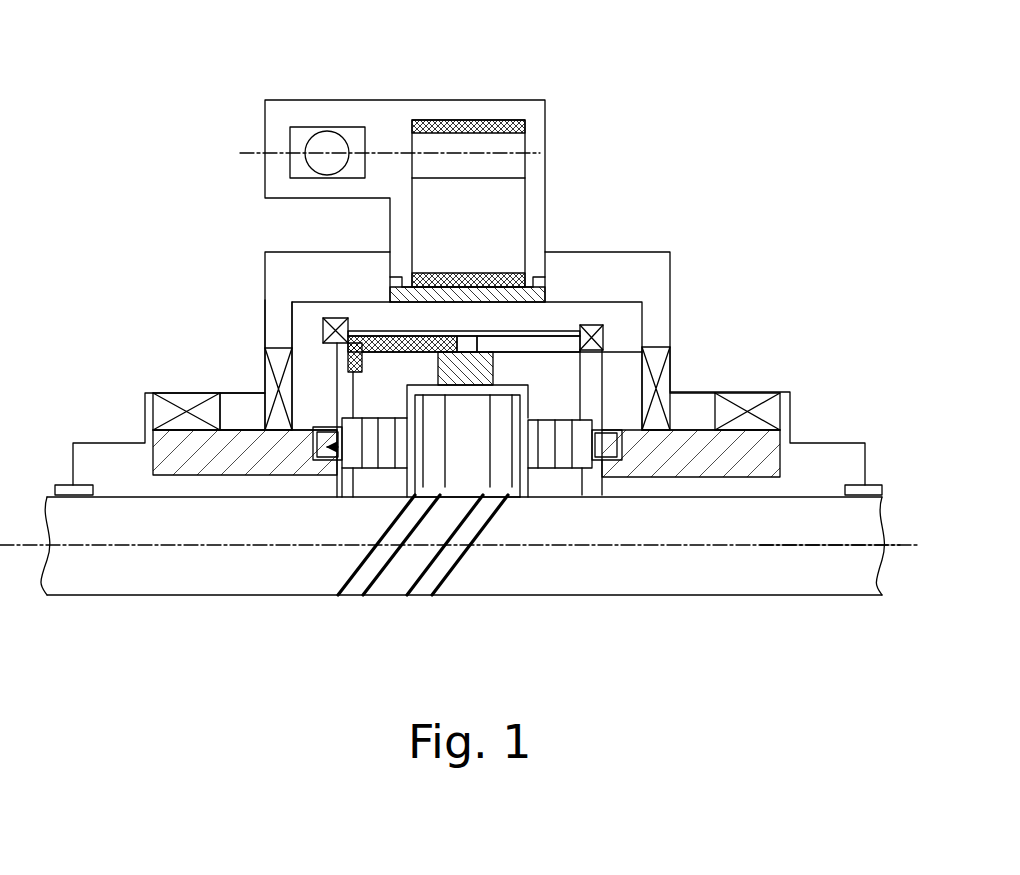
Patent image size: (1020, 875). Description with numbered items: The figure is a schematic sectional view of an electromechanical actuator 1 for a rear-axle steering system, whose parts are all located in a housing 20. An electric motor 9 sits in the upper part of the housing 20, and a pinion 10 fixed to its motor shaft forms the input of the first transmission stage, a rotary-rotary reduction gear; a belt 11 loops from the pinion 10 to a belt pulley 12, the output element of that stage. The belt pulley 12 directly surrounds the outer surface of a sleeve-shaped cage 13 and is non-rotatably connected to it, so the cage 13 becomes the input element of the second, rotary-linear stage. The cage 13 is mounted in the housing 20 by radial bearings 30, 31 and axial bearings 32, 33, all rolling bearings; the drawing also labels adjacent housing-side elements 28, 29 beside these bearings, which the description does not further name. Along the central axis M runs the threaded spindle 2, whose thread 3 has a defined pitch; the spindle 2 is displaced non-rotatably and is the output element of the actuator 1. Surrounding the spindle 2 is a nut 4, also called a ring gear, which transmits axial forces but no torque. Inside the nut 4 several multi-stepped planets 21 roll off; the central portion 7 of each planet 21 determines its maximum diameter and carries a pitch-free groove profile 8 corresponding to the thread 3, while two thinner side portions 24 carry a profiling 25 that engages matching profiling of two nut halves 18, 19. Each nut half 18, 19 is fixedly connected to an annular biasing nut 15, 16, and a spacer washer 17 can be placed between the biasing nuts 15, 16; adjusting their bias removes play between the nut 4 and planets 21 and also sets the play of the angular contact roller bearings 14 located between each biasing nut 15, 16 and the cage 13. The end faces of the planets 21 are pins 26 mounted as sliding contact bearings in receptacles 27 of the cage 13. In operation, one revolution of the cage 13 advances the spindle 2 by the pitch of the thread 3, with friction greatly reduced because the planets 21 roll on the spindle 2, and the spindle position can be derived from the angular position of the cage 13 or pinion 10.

The actuator 1 is at (724, 113).
The threaded spindle 2 is at (770, 596).
The thread 3 is at (412, 606).
The nut 4 is at (477, 344).
The central portion 7 is at (523, 497).
The profile 8 is at (368, 483).
The electric motor 9 is at (308, 127).
The pinion 10 is at (518, 142).
The belt 11 is at (526, 196).
The belt pulley 12 is at (546, 287).
The cage 13 is at (638, 312).
The bearing 14 is at (336, 325).
The biasing nut 15 is at (541, 338).
The biasing nut 16 is at (388, 341).
The spacer washer 17 is at (460, 346).
The nut half 18 is at (657, 360).
The nut half 19 is at (363, 390).
The housing 20 is at (364, 107).
The planet 21 is at (467, 424).
The side portion 24 is at (428, 504).
The profiling 25 is at (348, 480).
The pin 26 is at (610, 456).
The receptacle 27 is at (344, 454).
The support 28 is at (750, 457).
The support plate 29 is at (250, 428).
The radial bearing 30 is at (758, 397).
The radial bearing 31 is at (184, 400).
The axial bearing 32 is at (673, 388).
The axial bearing 33 is at (265, 368).
The central axis M is at (838, 548).